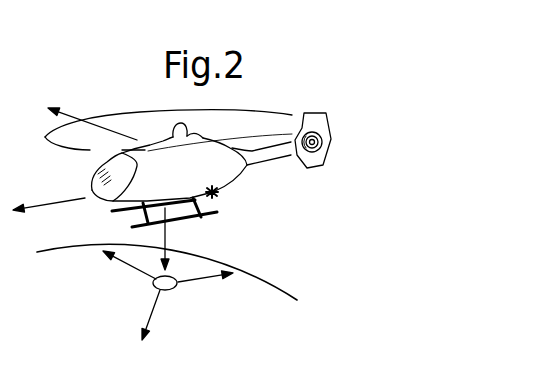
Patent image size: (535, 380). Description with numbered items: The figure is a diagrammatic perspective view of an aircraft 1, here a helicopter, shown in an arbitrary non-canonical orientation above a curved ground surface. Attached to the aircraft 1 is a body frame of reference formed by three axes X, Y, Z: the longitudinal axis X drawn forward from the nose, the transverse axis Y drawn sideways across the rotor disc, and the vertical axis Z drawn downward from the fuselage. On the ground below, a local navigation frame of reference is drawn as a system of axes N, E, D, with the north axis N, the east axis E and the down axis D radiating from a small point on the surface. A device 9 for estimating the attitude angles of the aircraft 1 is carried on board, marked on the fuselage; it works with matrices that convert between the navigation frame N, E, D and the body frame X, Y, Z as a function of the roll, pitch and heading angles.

The aircraft 1 is at (117, 70).
The device for estimating attitude angles 9 is at (217, 193).
The body frame axis X is at (49, 192).
The body frame axis Y is at (83, 115).
The body frame axis Z is at (167, 235).
The navigation axis N is at (120, 267).
The navigation axis E is at (208, 289).
The navigation axis D is at (138, 321).